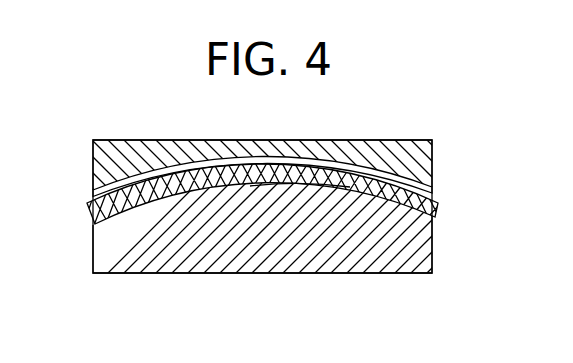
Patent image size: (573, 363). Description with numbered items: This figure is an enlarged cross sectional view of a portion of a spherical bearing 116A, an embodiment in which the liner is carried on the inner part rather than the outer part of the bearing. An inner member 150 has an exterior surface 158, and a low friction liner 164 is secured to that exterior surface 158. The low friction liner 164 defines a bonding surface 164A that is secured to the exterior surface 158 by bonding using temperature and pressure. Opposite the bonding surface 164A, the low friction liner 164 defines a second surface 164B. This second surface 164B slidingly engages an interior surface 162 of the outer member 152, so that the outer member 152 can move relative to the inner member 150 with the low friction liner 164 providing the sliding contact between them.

The spherical bearing 116A is at (407, 81).
The outer member 152 is at (432, 157).
The interior surface 162 is at (93, 195).
The low friction liner 164 is at (297, 167).
The bonding surface 164A is at (236, 186).
The second surface 164B is at (382, 170).
The exterior surface 158 is at (296, 177).
The inner member 150 is at (425, 242).